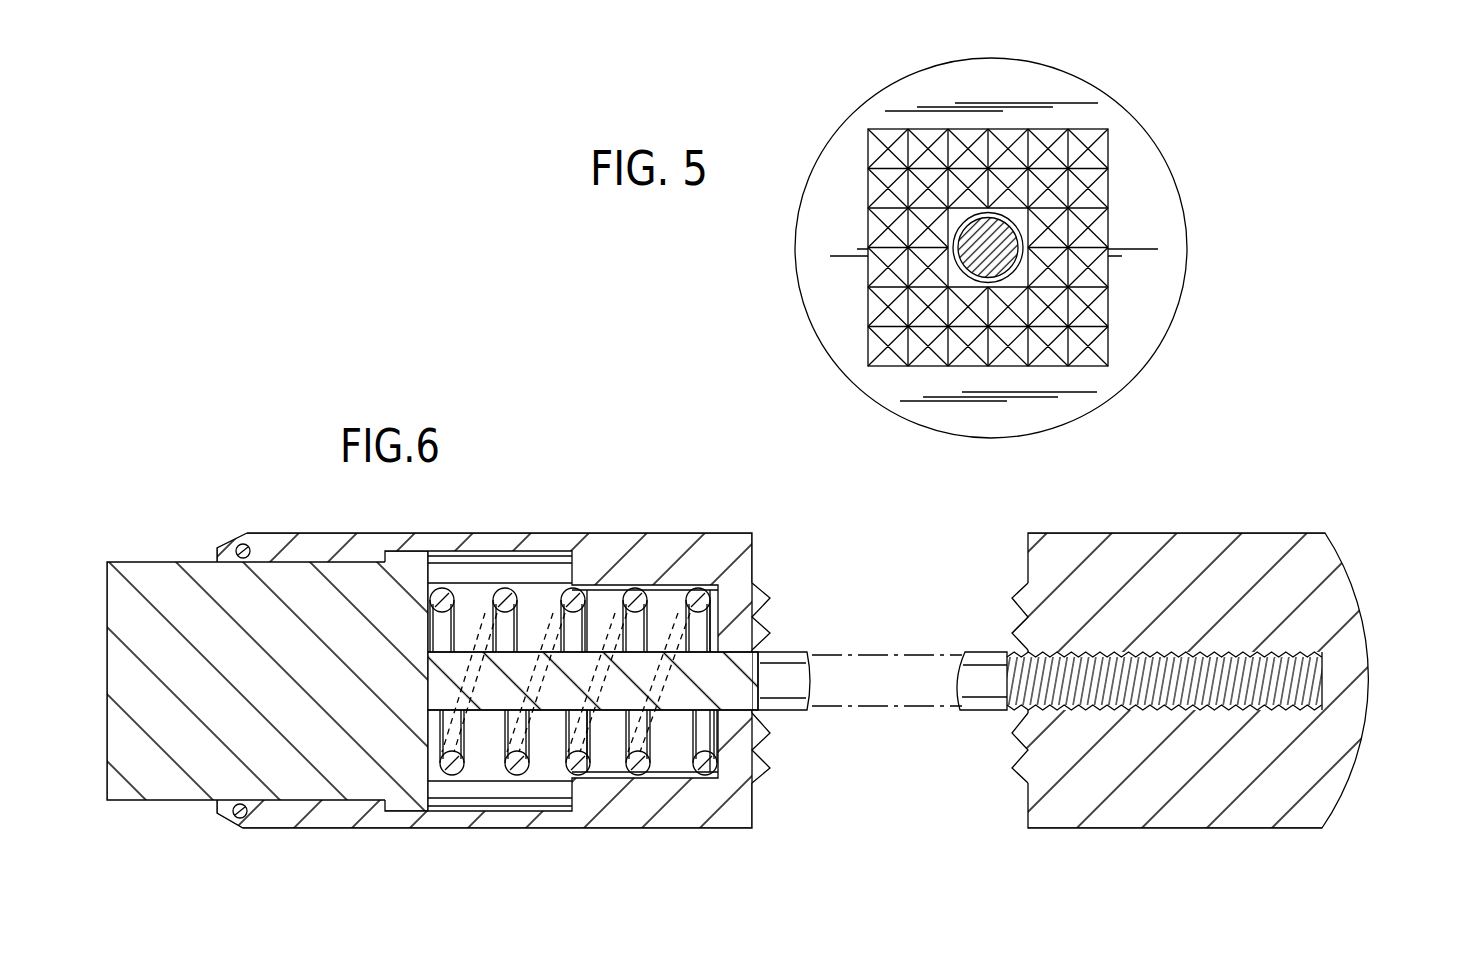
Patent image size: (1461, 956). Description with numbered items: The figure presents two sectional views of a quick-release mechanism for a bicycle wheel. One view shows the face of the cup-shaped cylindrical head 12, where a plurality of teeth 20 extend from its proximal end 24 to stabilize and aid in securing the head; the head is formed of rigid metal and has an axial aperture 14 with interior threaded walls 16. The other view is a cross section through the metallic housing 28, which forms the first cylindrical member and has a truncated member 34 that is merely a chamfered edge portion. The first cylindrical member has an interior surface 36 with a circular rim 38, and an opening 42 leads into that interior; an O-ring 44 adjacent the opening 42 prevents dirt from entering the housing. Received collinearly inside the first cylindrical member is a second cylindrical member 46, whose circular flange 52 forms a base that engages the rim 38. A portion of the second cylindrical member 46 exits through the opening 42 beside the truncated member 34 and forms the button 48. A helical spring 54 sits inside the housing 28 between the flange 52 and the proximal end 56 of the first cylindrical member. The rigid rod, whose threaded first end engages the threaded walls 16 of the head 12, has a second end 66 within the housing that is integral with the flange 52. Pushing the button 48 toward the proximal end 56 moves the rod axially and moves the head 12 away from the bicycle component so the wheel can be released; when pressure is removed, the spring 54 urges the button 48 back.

In FIG. 6, the cup-shaped cylindrical head 12 is at (1163, 532).
In FIG. 6, the axial aperture 14 is at (1320, 663).
In FIG. 6, the interior threaded walls 16 is at (1230, 704).
In FIG. 5, the teeth 20 is at (1087, 190).
In FIG. 6, the teeth 20 is at (753, 617).
In FIG. 6, the proximal end 24 is at (1028, 545).
In FIG. 6, the housing 28 is at (422, 543).
In FIG. 6, the truncated member 34 is at (225, 552).
In FIG. 6, the interior surface 36 is at (518, 567).
In FIG. 6, the circular rim 38 is at (375, 556).
In FIG. 6, the opening 42 is at (218, 805).
In FIG. 6, the O-ring 44 is at (270, 537).
In FIG. 6, the second cylindrical member 46 is at (320, 744).
In FIG. 6, the button 48 is at (158, 560).
In FIG. 6, the circular flange 52 is at (410, 793).
In FIG. 6, the helical spring 54 is at (590, 583).
In FIG. 6, the proximal end of the first cylindrical member 56 is at (753, 555).
In FIG. 6, the second end 66 is at (455, 705).